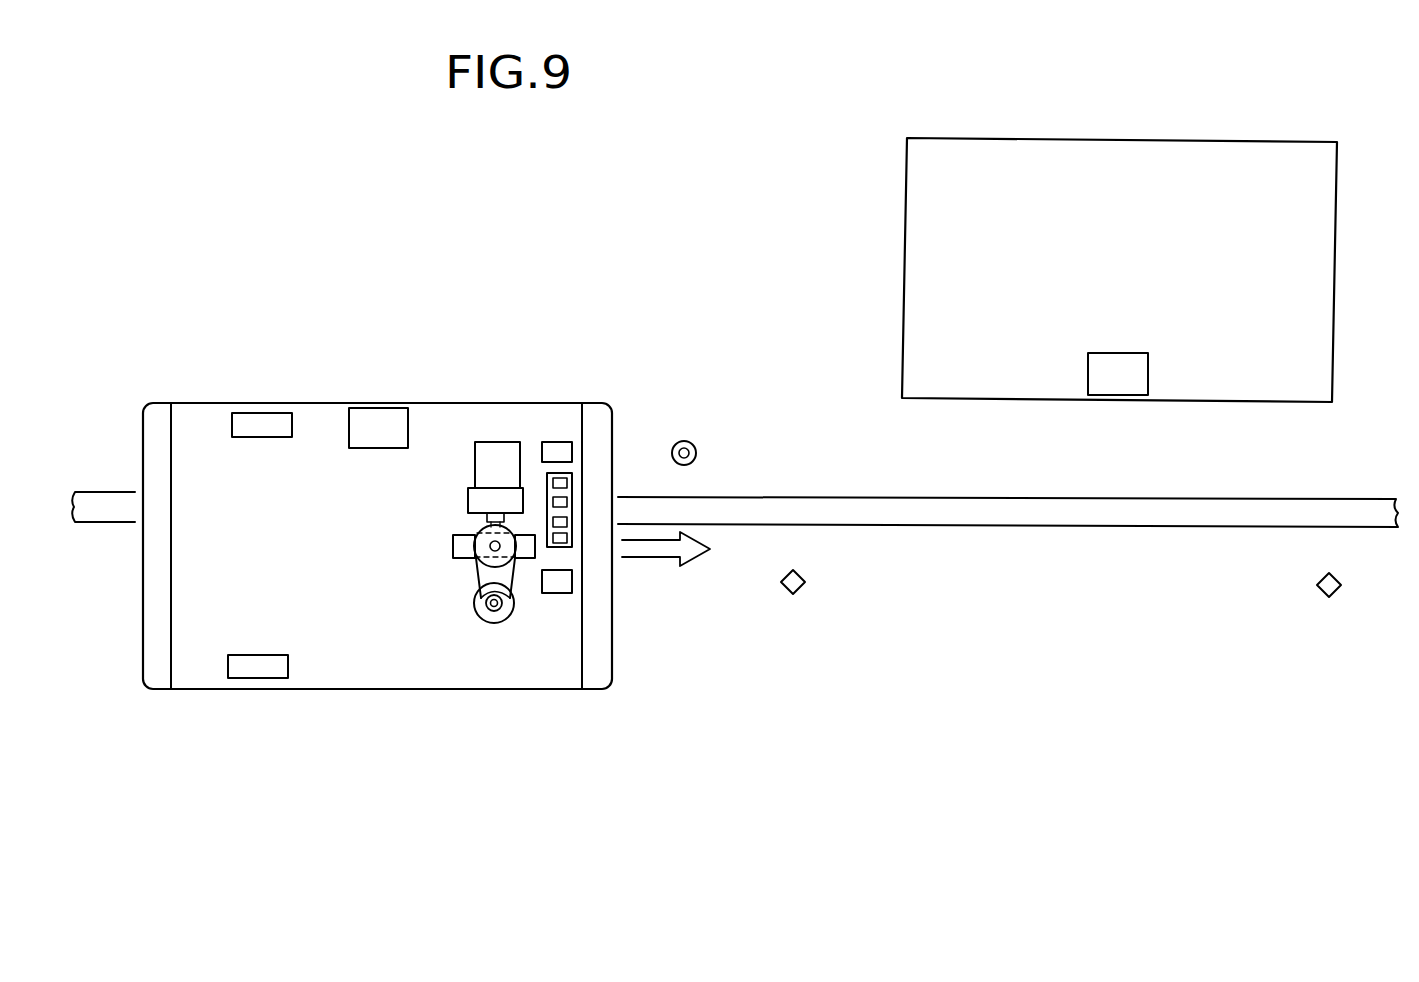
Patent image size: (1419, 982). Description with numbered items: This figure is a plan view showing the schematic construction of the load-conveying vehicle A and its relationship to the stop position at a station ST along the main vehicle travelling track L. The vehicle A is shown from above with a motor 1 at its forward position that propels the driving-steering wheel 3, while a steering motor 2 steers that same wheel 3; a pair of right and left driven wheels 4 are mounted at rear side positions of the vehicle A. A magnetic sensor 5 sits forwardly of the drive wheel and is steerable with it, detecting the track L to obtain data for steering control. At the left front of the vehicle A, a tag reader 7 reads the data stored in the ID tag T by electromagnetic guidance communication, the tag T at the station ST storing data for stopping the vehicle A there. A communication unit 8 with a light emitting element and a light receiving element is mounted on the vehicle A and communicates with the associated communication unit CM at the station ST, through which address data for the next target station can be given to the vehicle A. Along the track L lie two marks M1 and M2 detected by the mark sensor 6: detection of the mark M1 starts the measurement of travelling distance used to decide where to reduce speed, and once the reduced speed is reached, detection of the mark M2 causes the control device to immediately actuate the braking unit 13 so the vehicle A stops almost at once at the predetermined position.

The load-conveying vehicle A is at (612, 672).
The main vehicle travelling track L is at (767, 497).
The ID tag T is at (684, 441).
The station ST is at (905, 250).
The communication module CM is at (1088, 375).
The mark M1 is at (783, 592).
The mark M2 is at (1320, 598).
The motor 1 is at (475, 455).
The steering motor 2 is at (480, 615).
The driving-steering wheel 3 is at (453, 550).
The driven wheels 4 is at (262, 413).
The magnetic sensor 5 is at (575, 487).
The mark sensor 6 is at (556, 593).
The tag reader 7 is at (550, 442).
The communication unit 8 is at (390, 408).
The braking unit 13 is at (470, 492).